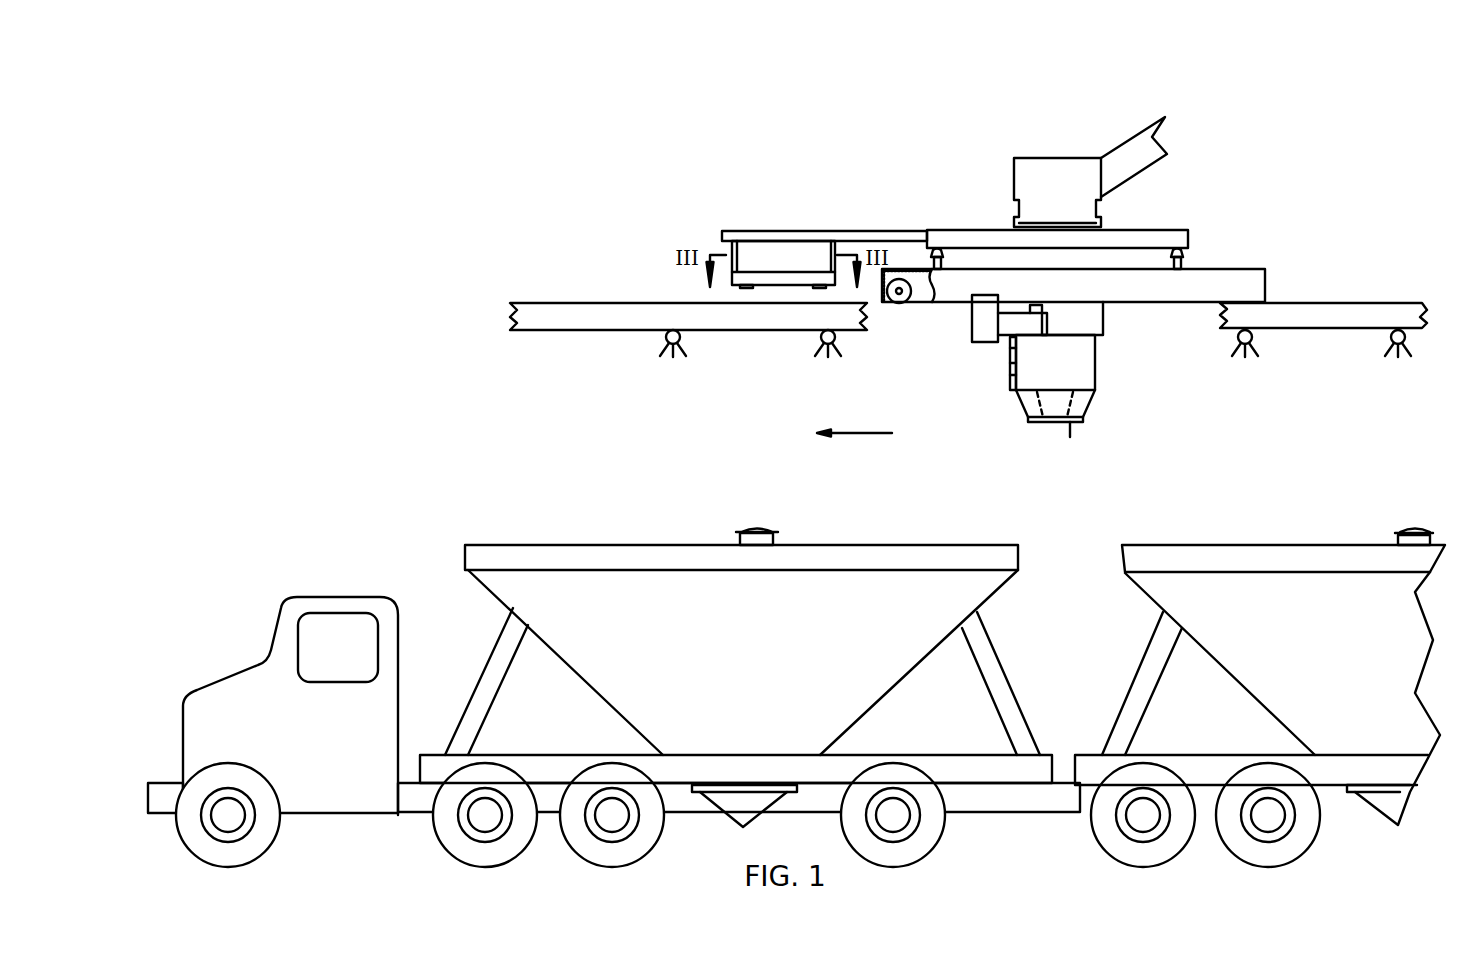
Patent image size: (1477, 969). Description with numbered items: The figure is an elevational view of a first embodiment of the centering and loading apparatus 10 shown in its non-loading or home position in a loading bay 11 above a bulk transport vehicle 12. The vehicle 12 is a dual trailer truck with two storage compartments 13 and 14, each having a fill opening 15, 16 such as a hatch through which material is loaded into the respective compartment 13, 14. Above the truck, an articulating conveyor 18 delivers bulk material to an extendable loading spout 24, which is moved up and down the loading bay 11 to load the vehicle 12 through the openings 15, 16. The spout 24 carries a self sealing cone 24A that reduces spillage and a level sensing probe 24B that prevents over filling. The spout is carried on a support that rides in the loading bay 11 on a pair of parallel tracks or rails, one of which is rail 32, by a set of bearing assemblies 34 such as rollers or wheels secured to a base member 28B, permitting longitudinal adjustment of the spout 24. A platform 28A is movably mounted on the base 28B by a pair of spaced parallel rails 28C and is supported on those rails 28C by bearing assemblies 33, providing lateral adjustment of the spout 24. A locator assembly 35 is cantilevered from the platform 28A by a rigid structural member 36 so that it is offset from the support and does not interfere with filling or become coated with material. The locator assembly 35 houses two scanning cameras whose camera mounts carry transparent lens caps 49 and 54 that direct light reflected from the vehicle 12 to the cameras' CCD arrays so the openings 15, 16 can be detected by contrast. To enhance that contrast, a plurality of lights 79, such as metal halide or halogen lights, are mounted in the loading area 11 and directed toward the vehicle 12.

The centering and loading apparatus 10 is at (1238, 149).
The loading bay 11 is at (521, 282).
The bulk transport vehicle 12 is at (348, 560).
The storage compartment 13 is at (890, 672).
The storage compartment 14 is at (1240, 662).
The fill opening 15 is at (777, 538).
The fill opening 16 is at (1397, 539).
The articulating conveyor 18 is at (1000, 173).
The extendable loading spout 24 is at (1110, 372).
The self sealing cone 24A is at (1020, 400).
The level sensing probe 24B is at (1072, 422).
The platform 28A is at (1130, 235).
The base member 28B is at (1265, 277).
The rails 28C is at (941, 265).
The rail 32 is at (1330, 316).
The bearing assemblies 33 is at (938, 248).
The bearing assemblies 34 is at (908, 300).
The locator assembly 35 is at (769, 304).
The rigid structural member 36 is at (828, 231).
The lens cap 49 is at (742, 287).
The lens cap 54 is at (833, 288).
The lights 79 is at (663, 337).